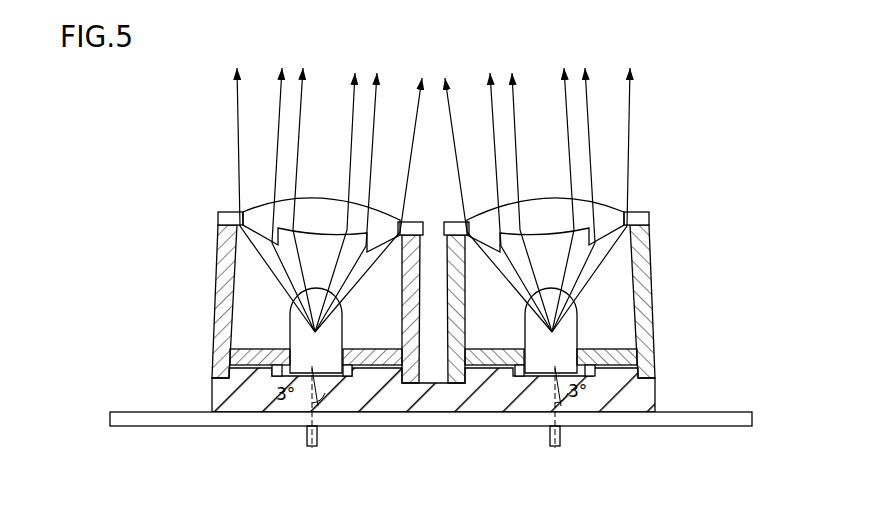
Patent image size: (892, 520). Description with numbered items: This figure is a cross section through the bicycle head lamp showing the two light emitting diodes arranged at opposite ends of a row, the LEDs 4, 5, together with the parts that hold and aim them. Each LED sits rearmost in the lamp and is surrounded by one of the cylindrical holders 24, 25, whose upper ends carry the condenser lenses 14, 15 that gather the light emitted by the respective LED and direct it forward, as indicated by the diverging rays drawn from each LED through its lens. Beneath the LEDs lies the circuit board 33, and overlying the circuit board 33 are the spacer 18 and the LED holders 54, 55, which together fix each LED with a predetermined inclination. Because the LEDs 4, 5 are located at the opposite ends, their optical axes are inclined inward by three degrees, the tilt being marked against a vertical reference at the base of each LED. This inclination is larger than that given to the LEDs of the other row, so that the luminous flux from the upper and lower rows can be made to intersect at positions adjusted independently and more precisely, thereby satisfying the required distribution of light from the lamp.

The LED 4 is at (303, 337).
The LED 5 is at (567, 335).
The condenser lens 14 is at (322, 211).
The condenser lens 15 is at (540, 211).
The spacer 18 is at (633, 398).
The cylindrical holder 24 is at (217, 258).
The cylindrical holder 25 is at (650, 258).
The circuit board 33 is at (413, 427).
The LED holder 54 is at (214, 358).
The LED holder 55 is at (653, 357).